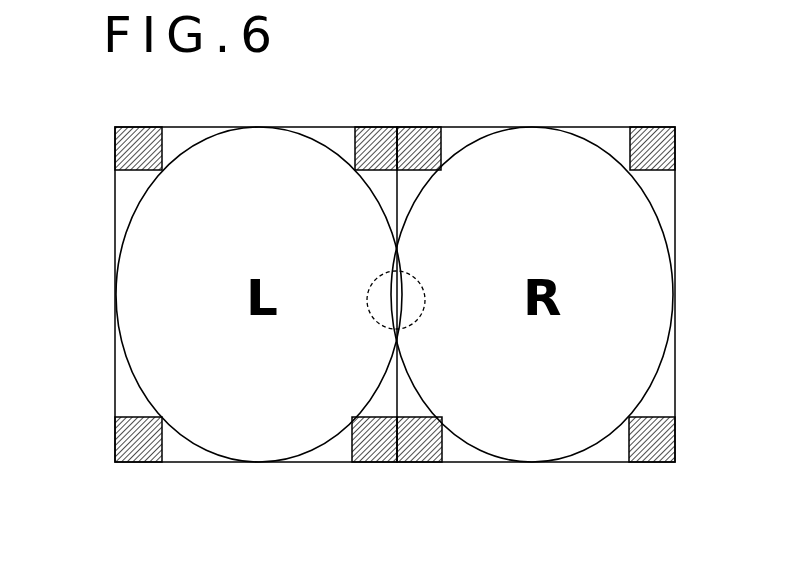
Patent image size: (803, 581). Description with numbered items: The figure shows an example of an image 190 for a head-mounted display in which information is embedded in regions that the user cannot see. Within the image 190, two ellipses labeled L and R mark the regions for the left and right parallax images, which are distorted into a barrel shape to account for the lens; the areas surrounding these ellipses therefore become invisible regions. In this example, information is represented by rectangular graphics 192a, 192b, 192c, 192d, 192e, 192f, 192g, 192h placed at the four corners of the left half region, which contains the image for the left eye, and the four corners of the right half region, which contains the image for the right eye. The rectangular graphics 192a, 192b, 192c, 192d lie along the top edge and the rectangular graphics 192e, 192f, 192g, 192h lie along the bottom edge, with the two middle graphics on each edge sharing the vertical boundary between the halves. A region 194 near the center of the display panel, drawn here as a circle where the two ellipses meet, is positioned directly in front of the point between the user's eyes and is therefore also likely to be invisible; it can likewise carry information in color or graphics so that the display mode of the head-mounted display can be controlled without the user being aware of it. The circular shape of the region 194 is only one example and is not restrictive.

The image 190 is at (676, 412).
The rectangular graphic 192a is at (136, 130).
The rectangular graphic 192b is at (365, 130).
The rectangular graphic 192c is at (425, 130).
The rectangular graphic 192d is at (653, 130).
The rectangular graphic 192e is at (134, 465).
The rectangular graphic 192f is at (362, 465).
The rectangular graphic 192g is at (423, 465).
The rectangular graphic 192h is at (648, 465).
The region 194 is at (418, 282).